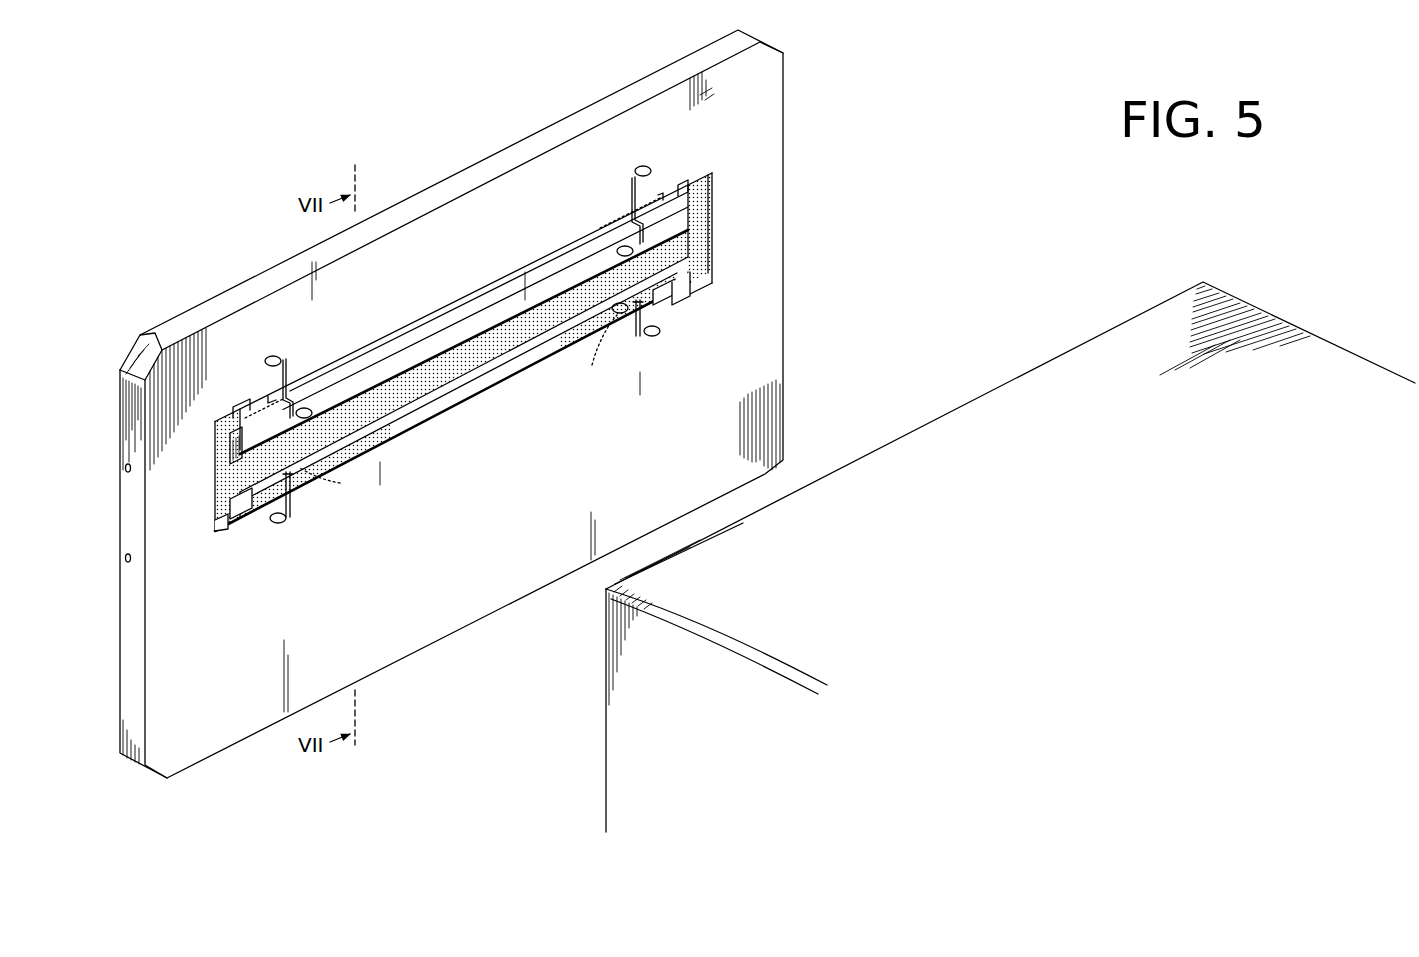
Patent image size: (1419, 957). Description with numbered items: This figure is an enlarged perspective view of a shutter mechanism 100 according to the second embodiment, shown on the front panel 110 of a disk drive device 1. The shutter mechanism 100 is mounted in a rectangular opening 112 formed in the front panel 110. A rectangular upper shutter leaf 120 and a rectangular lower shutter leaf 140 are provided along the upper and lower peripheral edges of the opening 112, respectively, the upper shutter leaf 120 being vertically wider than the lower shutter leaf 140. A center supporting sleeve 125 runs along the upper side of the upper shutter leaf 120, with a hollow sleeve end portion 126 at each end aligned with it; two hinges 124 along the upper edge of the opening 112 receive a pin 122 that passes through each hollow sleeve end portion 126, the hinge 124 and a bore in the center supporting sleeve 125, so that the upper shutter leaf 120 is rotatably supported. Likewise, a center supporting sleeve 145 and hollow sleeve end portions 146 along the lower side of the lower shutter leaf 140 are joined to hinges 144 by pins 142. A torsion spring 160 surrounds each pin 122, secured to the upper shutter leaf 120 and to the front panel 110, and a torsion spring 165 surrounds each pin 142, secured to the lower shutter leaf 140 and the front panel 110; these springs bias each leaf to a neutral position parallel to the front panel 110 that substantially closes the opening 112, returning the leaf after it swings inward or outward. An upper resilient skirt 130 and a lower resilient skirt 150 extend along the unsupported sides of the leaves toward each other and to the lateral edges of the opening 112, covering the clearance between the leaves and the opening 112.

The disk drive device 1 is at (1095, 355).
The shutter mechanism 100 is at (870, 111).
The front panel 110 is at (768, 350).
The opening 112 is at (718, 232).
The upper shutter leaf 120 is at (396, 358).
The pin 122 is at (305, 385).
The hinge 124 is at (268, 395).
The center supporting sleeve 125 is at (437, 328).
The hollow sleeve end portion 126 is at (243, 407).
The upper resilient skirt 130 is at (494, 294).
The lower shutter leaf 140 is at (428, 408).
The pin 142 is at (342, 486).
The hinge 144 is at (263, 500).
The center supporting sleeve 145 is at (473, 382).
The hollow sleeve end portion 146 is at (238, 530).
The lower resilient skirt 150 is at (508, 350).
The torsion spring 160 is at (628, 192).
The torsion spring 165 is at (295, 512).